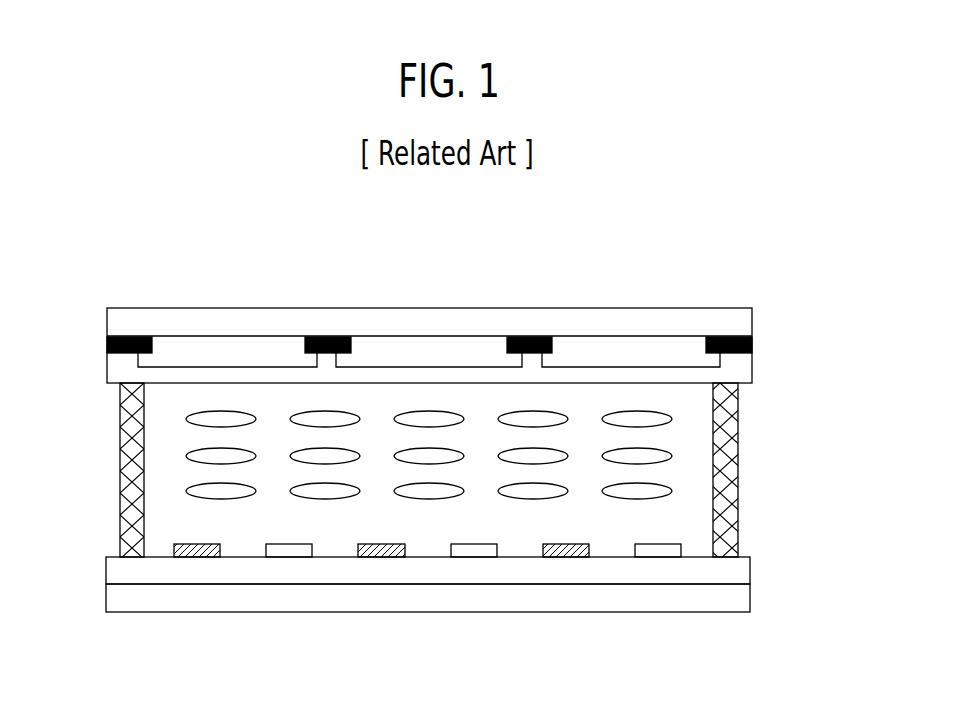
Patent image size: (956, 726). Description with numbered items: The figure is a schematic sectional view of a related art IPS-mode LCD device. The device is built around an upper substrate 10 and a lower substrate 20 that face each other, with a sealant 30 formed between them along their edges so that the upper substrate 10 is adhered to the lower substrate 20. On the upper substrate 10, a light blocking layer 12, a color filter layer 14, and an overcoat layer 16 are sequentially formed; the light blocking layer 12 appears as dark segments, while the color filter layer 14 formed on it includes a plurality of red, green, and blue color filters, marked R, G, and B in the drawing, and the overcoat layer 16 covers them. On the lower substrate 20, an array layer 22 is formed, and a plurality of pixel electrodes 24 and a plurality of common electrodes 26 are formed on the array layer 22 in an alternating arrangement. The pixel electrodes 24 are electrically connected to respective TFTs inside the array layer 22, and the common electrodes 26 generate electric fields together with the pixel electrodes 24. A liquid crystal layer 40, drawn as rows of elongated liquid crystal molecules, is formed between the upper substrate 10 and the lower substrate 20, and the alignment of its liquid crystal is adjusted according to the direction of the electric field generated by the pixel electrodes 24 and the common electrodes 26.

The upper substrate 10 is at (752, 325).
The light blocking layer 12 is at (530, 337).
The color filter layer 14 is at (662, 346).
The overcoat layer 16 is at (752, 363).
The lower substrate 20 is at (752, 598).
The array layer 22 is at (752, 572).
The pixel electrodes 24 is at (193, 557).
The common electrodes 26 is at (291, 550).
The sealant 30 is at (738, 445).
The liquid crystal layer 40 is at (162, 478).